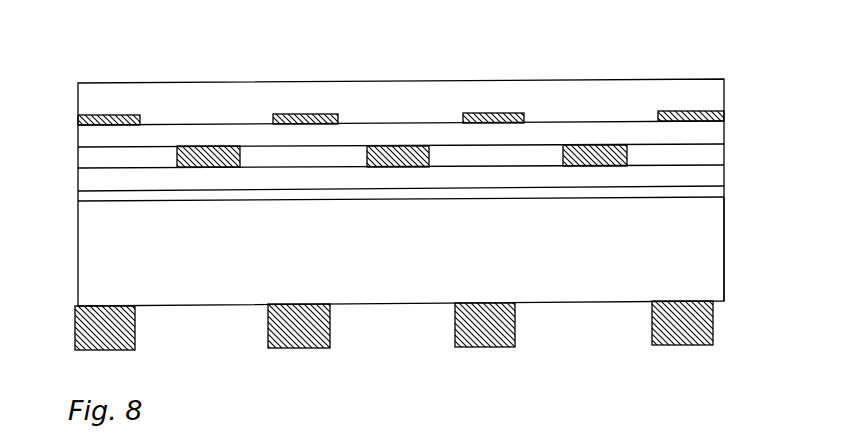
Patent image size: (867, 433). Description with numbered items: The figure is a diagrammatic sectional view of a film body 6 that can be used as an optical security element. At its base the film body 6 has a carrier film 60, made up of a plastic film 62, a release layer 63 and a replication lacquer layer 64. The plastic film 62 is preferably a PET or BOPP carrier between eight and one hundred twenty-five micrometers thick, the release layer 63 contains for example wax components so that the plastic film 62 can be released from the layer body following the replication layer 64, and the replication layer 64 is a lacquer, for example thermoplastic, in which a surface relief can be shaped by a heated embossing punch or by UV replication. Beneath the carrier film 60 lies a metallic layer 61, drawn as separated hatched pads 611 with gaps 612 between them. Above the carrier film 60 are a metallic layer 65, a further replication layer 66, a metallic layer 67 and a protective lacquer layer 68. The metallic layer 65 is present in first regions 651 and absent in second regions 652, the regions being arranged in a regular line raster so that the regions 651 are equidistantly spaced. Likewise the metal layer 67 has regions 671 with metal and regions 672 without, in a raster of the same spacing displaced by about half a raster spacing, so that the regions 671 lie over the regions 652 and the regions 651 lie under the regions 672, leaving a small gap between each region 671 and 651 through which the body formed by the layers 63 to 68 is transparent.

The film body 6 is at (735, 42).
The carrier film 60 is at (72, 306).
The metallic layer 61 is at (713, 319).
The bottom contact pads 611 is at (106, 351).
The gaps between bottom contact pads 612 is at (207, 345).
The plastic film 62 is at (722, 241).
The release layer 63 is at (724, 190).
The replication lacquer layer 64 is at (724, 172).
The metallic layer 65 is at (724, 150).
The first region 651 is at (202, 168).
The second region 652 is at (138, 168).
The further replication layer 66 is at (724, 128).
The metallic layer 67 is at (725, 118).
The metallic region 671 is at (116, 126).
The non-metallic region 672 is at (214, 125).
The protective lacquer layer 68 is at (722, 87).